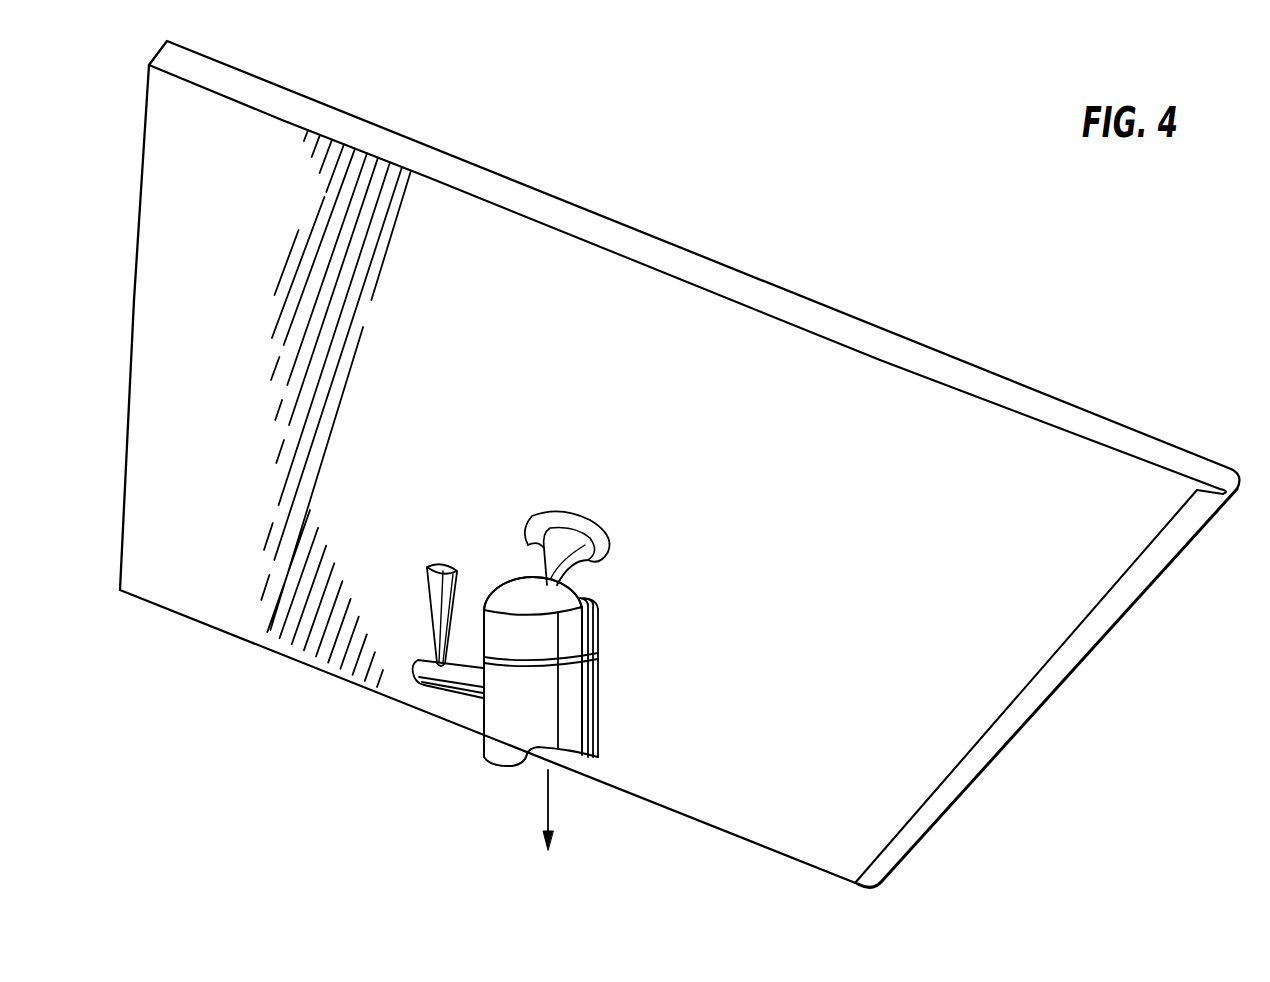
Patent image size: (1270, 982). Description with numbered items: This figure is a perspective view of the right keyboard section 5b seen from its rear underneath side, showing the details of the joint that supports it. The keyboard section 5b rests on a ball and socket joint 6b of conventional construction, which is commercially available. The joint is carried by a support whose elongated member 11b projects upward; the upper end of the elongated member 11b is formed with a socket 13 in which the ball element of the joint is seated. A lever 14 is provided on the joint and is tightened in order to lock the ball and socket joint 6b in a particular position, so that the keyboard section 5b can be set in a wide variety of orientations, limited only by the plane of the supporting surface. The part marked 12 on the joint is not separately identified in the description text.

The panel 5b is at (960, 357).
The faucet body 6b is at (600, 625).
The sleeve 11b is at (602, 700).
The spout 12 is at (577, 587).
The cap 13 is at (497, 600).
The lever handle 14 is at (425, 592).